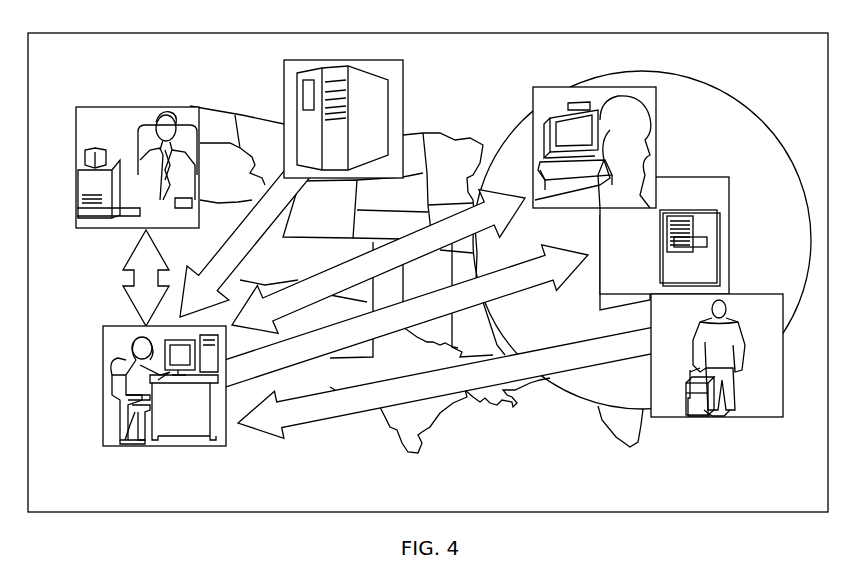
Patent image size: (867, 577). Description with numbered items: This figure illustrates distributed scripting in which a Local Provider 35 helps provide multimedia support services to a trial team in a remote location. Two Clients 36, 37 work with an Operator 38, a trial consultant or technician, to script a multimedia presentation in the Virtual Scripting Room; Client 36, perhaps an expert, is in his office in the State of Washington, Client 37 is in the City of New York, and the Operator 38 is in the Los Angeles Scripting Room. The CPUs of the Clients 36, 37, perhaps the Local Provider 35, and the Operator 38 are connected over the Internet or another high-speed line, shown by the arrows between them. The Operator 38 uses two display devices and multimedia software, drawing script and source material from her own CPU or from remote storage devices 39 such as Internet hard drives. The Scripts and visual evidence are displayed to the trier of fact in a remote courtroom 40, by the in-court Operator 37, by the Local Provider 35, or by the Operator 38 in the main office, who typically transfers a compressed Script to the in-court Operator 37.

The Local Provider 35 is at (753, 310).
The Client 36 is at (117, 123).
The Client 37 is at (560, 97).
The Operator 38 is at (122, 340).
The remote storage devices 39 is at (303, 73).
The remote courtroom 40 is at (705, 226).